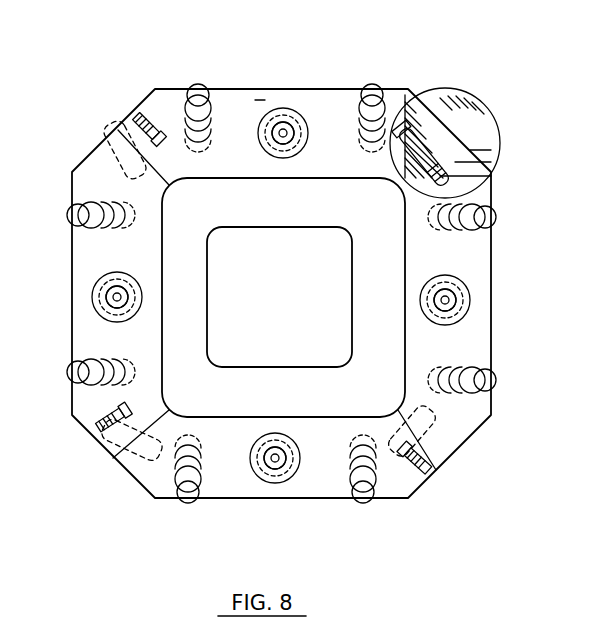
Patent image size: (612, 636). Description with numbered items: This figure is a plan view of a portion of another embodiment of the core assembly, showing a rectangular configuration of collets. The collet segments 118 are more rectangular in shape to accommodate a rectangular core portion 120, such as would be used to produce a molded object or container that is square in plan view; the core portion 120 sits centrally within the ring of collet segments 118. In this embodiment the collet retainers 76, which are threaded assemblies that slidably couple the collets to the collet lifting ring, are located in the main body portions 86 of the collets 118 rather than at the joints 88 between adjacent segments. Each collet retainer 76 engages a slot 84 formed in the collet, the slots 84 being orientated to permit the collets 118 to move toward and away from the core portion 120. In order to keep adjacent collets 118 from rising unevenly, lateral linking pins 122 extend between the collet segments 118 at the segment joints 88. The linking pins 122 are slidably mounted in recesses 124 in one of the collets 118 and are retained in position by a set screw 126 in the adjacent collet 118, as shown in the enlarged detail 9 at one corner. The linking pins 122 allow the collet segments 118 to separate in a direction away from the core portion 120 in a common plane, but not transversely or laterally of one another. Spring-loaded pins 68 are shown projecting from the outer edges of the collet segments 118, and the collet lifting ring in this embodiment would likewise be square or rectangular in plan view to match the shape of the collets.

The detail view of corner clamp section 9 is at (477, 102).
The spring-loaded locating pins 68 is at (197, 86).
The collet retainers 76 is at (283, 130).
The slots 84 is at (300, 138).
The body portion 86 is at (255, 100).
The joints 88 is at (122, 120).
The collet segments 118 is at (128, 201).
The rectangular core portion 120 is at (222, 352).
The lateral linking pins 122 is at (118, 160).
The recesses 124 is at (393, 98).
The set screw 126 is at (458, 158).